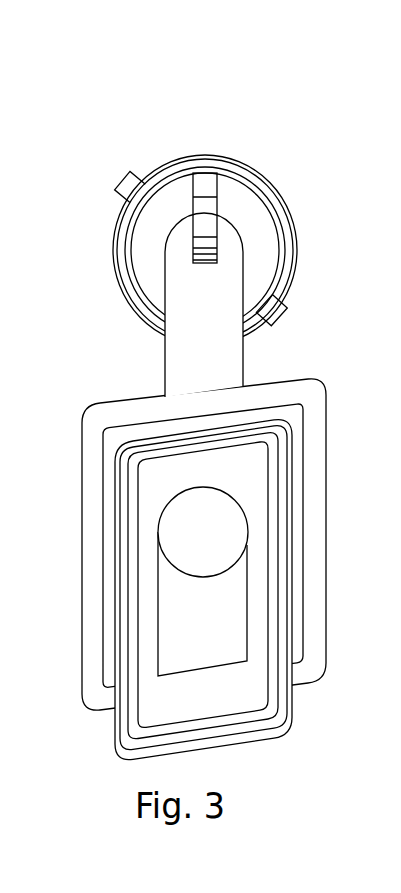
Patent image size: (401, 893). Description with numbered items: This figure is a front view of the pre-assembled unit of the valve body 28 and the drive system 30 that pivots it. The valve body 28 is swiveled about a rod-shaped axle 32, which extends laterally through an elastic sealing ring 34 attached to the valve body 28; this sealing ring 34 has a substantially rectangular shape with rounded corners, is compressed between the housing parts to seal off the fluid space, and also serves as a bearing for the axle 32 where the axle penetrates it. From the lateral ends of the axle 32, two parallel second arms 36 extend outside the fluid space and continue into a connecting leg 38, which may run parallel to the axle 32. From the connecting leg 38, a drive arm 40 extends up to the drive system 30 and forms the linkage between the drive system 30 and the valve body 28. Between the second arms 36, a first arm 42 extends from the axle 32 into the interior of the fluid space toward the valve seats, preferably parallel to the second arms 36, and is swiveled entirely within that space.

The valve body 28 is at (205, 528).
The drive system 30 is at (240, 108).
The rod-shaped axle 32 is at (255, 689).
The sealing ring 34 is at (287, 572).
The second arms 36 is at (82, 547).
The connecting leg 38 is at (265, 388).
The drive arm 40 is at (183, 355).
The first arm 42 is at (170, 628).